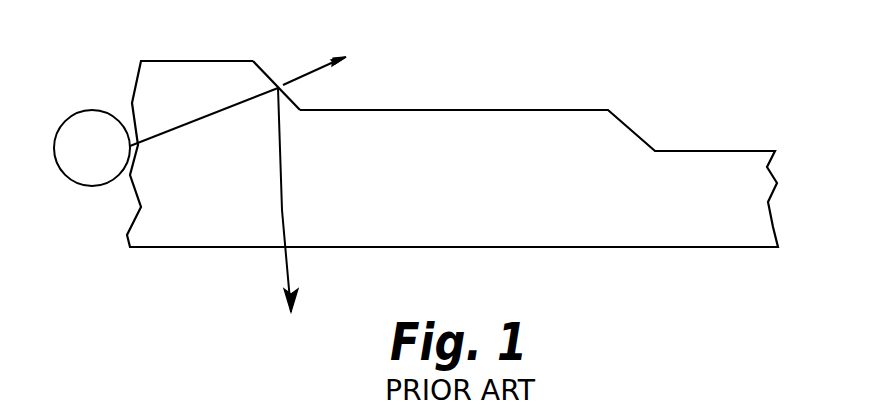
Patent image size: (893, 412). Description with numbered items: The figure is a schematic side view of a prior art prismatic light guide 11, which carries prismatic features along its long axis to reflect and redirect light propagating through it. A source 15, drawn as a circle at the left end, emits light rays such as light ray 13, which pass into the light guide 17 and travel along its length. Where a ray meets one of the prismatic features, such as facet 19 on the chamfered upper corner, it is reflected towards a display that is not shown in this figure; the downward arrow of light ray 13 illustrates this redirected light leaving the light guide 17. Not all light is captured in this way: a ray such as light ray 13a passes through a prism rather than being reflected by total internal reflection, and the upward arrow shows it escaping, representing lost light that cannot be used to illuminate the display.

The prismatic light guide 11 is at (433, 161).
The light ray 13 is at (287, 265).
The light ray 13a is at (310, 73).
The source 15 is at (78, 125).
The light guide 17 is at (763, 192).
The facet 19 is at (258, 64).